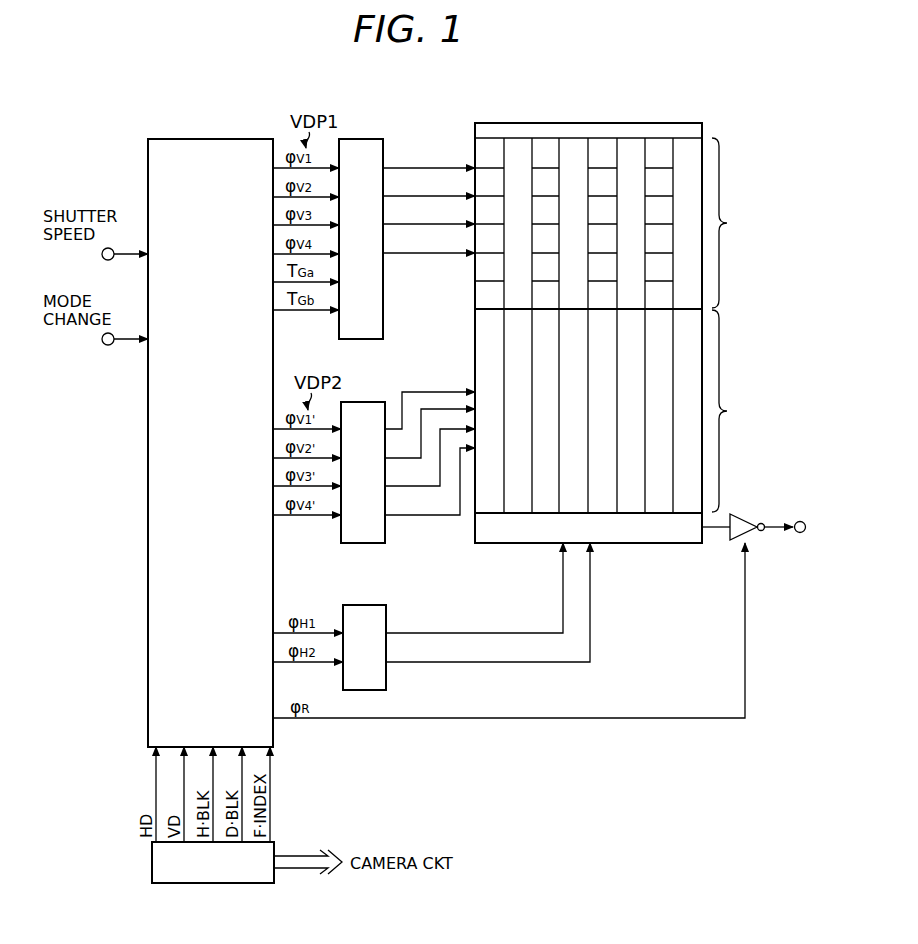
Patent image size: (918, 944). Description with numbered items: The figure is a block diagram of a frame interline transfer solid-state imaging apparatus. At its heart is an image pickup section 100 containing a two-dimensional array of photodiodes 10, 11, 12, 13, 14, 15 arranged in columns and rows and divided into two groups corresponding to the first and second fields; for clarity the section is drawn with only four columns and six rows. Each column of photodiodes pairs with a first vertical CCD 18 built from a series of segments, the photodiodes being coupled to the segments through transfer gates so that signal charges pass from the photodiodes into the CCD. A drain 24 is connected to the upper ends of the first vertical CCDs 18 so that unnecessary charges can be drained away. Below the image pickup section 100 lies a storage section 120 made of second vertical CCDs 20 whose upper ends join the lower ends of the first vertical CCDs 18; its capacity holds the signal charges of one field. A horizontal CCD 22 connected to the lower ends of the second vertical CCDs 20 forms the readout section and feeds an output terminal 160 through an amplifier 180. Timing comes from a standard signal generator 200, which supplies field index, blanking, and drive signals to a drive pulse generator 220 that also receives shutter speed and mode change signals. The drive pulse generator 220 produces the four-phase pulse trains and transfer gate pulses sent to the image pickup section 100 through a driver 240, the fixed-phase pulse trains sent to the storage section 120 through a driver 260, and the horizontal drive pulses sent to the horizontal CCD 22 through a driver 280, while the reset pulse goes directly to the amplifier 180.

The photodiode 10 is at (500, 285).
The photodiode 11 is at (500, 257).
The photodiode 12 is at (500, 228).
The photodiode 13 is at (500, 200).
The photodiode 14 is at (500, 172).
The photodiode 15 is at (501, 146).
The first vertical CCD 18 is at (571, 145).
The second vertical CCD 20 is at (523, 509).
The horizontal CCD 22 is at (609, 535).
The drain 24 is at (604, 123).
The image pickup section 100 is at (739, 223).
The storage section 120 is at (739, 411).
The output terminal 160 is at (796, 520).
The amplifier 180 is at (748, 536).
The standard signal generator 200 is at (247, 884).
The drive pulse generator 220 is at (148, 673).
The driver 240 is at (362, 139).
The driver 260 is at (364, 402).
The driver 280 is at (366, 605).